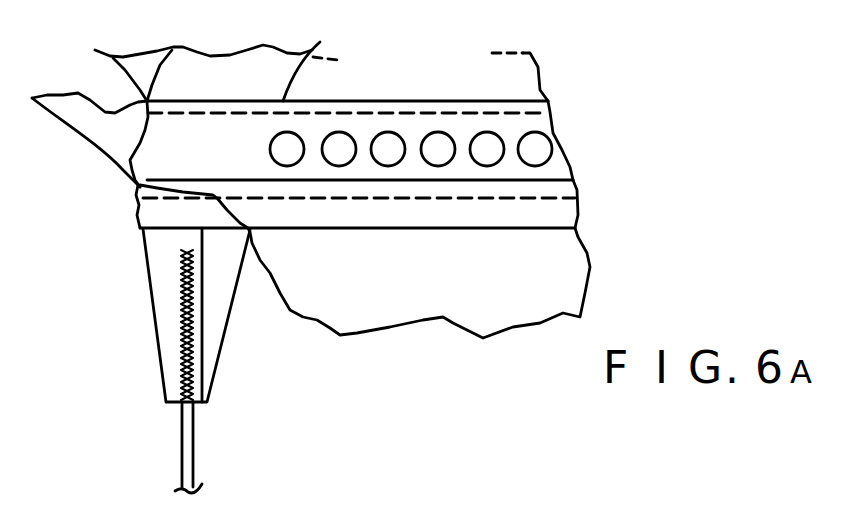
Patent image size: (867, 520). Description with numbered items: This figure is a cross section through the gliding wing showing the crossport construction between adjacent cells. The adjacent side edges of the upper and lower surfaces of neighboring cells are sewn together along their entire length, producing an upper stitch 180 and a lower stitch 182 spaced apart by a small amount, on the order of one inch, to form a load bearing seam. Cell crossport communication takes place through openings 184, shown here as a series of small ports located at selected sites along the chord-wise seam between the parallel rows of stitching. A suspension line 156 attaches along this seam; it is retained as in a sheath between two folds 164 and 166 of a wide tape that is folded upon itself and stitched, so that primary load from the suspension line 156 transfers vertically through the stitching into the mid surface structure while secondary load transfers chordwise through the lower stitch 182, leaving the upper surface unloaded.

The suspension line 156 is at (190, 447).
The fold 164 is at (224, 322).
The fold 166 is at (165, 301).
The upper stitch 180 is at (235, 113).
The lower stitch 182 is at (418, 181).
The openings 184 is at (530, 143).